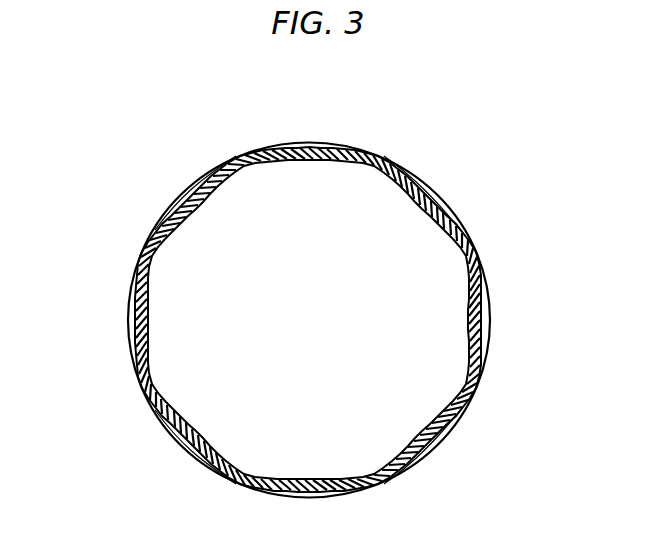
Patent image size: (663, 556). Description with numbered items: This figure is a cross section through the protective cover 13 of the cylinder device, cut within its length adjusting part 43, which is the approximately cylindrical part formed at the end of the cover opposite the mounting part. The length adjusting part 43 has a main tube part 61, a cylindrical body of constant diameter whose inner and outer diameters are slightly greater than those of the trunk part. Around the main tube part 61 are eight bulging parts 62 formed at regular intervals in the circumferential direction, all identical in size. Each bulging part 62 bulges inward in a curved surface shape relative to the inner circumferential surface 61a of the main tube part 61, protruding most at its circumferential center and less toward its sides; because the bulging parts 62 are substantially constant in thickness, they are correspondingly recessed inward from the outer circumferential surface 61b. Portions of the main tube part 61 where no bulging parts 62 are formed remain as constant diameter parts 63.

The protective cover 13 is at (510, 193).
The length adjusting part 43 is at (386, 150).
The main tube part 61 is at (313, 142).
The inner circumferential surface 61a is at (234, 158).
The outer circumferential surface 61b is at (141, 250).
The bulging part 62 is at (433, 205).
The constant diameter part 63 is at (181, 192).